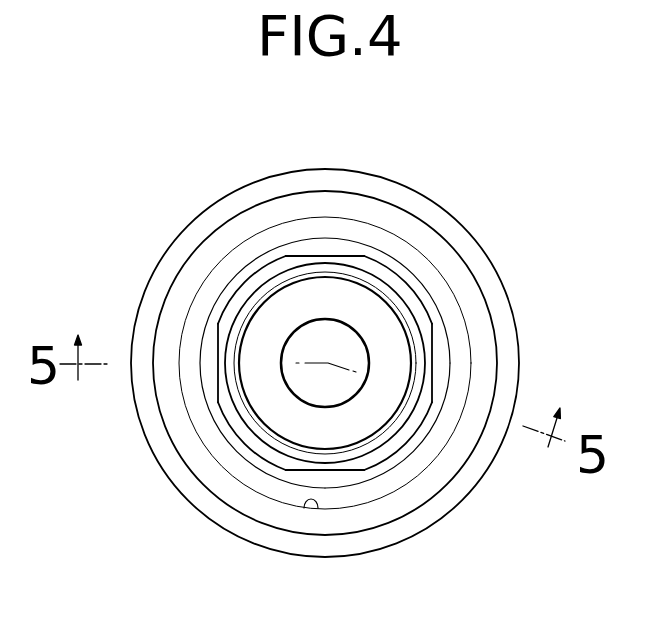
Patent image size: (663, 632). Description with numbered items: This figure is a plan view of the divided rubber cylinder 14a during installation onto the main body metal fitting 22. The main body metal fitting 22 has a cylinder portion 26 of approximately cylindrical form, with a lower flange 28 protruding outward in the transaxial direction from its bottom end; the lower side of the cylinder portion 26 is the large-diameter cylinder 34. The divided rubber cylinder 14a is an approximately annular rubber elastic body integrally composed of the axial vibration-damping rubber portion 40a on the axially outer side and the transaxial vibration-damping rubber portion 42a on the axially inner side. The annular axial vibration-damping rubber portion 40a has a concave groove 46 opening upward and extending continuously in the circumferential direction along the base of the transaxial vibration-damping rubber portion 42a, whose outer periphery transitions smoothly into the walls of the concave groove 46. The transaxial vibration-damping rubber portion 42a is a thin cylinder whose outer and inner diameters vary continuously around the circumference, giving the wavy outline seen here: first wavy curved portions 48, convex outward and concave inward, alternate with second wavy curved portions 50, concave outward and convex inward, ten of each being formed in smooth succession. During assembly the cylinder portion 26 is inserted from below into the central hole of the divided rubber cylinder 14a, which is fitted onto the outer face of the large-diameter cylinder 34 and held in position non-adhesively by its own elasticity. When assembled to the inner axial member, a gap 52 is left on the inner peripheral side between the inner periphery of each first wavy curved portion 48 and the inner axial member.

The divided rubber cylinder 14a is at (432, 209).
The lower flange 28 is at (339, 178).
The axial vibration-damping rubber portion 40a is at (176, 255).
The concave groove 46 is at (300, 507).
The main body metal fitting 22 is at (426, 283).
The transaxial vibration-damping rubber portion 42a is at (438, 456).
The gap 52 is at (295, 265).
The second wavy curved portion 50 is at (257, 272).
The first wavy curved portion 48 is at (444, 360).
The large-diameter cylinder 34 is at (383, 443).
The cylinder portion 26 is at (348, 300).